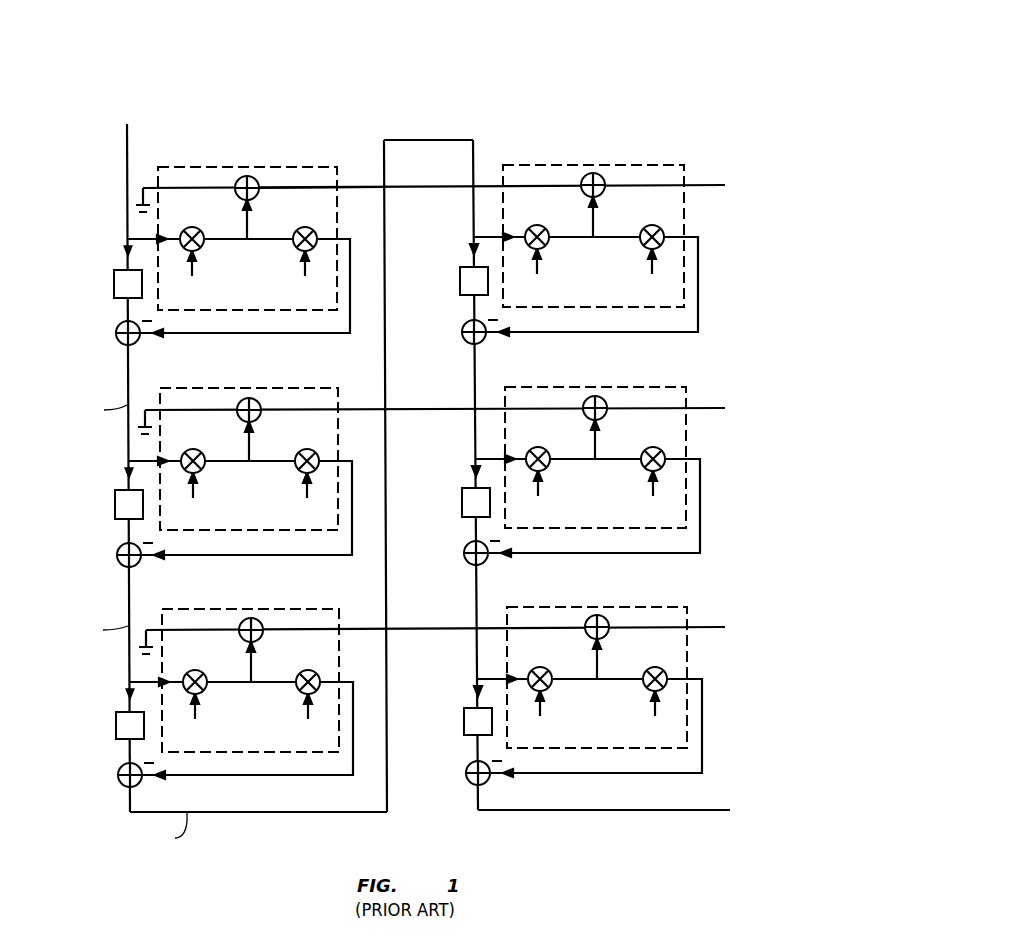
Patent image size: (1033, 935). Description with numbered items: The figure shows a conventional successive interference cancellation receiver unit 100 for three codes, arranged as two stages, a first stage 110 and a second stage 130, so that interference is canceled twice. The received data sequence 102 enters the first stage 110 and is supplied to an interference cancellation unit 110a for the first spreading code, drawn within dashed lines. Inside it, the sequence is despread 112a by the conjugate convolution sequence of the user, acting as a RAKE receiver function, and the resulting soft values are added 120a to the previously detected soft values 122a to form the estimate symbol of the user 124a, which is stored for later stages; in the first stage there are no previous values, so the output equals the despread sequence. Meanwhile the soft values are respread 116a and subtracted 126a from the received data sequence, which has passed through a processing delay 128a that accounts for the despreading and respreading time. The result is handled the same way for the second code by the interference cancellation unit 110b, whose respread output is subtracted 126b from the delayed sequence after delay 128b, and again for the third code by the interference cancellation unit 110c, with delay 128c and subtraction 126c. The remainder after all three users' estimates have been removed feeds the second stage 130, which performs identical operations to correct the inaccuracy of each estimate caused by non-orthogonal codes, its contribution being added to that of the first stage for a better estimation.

The successive interference cancellation receiver unit 100 is at (619, 72).
The received data sequence r 102 is at (127, 186).
The first stage 110 is at (222, 448).
The interference cancellation unit for the first spreading code 110a is at (196, 166).
The interference cancellation unit for the second user code 110b is at (198, 388).
The interference cancellation unit for the third user code 110c is at (200, 609).
The despreading operation 112a is at (190, 228).
The respreading operation 116a is at (306, 228).
The addition operation 120a is at (255, 178).
The previously detected soft values 122a is at (141, 202).
The estimate symbol of the user 124a is at (379, 186).
The subtraction operation 126a is at (118, 340).
The subtraction operation 126b is at (119, 561).
The subtraction operation 126c is at (120, 782).
The processing delay 128a is at (114, 285).
The processing delay 128b is at (115, 508).
The processing delay 128c is at (116, 728).
The second stage 130 is at (578, 152).